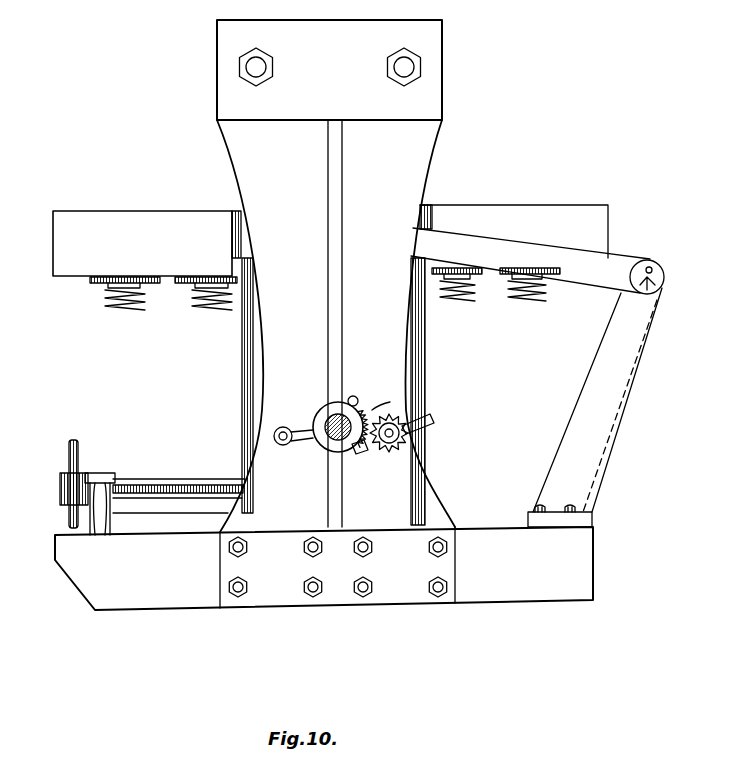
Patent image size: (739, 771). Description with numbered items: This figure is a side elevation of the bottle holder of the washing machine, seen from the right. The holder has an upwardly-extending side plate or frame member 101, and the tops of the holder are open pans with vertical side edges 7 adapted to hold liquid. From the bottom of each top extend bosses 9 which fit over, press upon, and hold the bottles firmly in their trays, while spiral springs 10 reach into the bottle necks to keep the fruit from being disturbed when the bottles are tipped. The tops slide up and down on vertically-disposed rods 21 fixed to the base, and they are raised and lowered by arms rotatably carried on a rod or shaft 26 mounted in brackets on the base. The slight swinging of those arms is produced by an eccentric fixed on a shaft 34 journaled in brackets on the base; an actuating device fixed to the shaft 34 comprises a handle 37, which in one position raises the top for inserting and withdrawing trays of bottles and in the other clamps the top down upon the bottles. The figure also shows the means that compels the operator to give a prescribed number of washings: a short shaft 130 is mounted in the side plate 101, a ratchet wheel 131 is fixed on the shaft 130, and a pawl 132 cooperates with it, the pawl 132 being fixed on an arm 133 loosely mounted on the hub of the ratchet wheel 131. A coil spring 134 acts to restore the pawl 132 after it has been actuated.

The vertical side edges 7 is at (110, 232).
The bosses 9 is at (96, 286).
The spiral springs 10 is at (125, 306).
The vertically-disposed rods 21 is at (246, 368).
The rod or shaft 26 is at (665, 279).
The shaft 34 is at (173, 479).
The handle 37 is at (68, 462).
The side plate or frame member 101 is at (428, 183).
The short shaft 130 is at (408, 436).
The ratchet wheel 131 is at (425, 443).
The pawl 132 is at (398, 406).
The arm 133 is at (358, 456).
The coil spring 134 is at (368, 392).